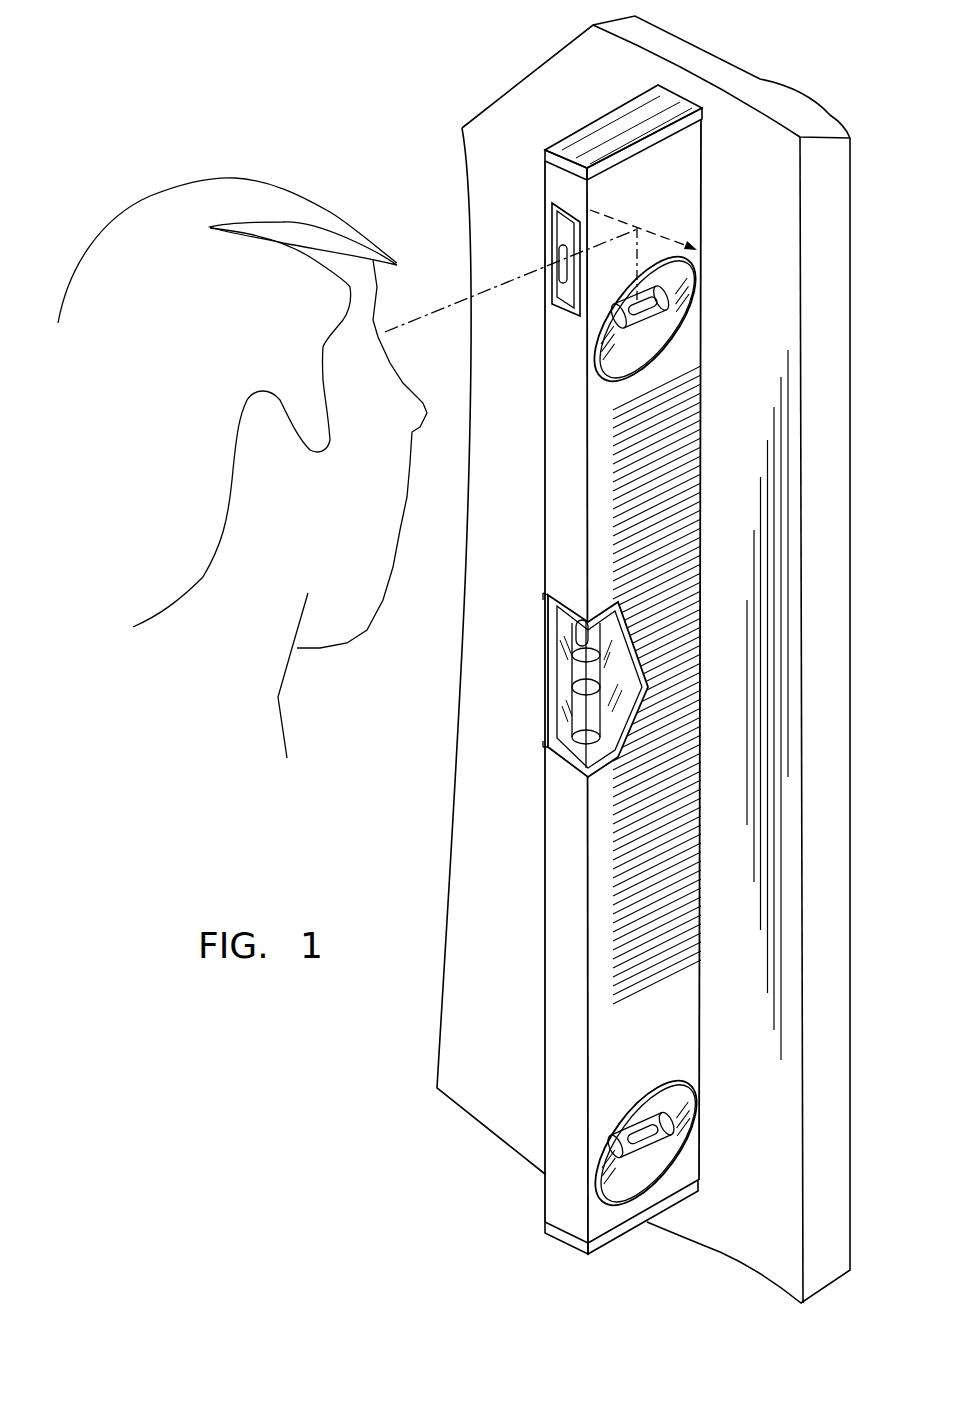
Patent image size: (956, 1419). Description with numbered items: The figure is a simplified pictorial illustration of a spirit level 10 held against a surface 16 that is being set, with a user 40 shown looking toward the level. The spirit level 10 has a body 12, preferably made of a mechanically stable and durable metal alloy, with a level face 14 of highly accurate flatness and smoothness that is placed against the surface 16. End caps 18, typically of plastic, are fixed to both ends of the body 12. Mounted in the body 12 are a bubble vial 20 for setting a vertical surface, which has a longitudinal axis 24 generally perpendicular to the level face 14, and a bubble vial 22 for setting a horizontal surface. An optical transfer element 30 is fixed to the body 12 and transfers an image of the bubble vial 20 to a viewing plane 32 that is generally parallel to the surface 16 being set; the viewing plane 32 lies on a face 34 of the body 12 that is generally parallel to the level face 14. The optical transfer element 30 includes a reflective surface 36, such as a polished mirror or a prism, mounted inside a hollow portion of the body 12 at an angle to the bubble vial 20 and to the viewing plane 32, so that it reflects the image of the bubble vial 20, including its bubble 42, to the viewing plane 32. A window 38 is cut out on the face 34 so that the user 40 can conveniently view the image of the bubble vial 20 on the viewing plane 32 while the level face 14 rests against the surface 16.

The spirit level 10 is at (434, 179).
The body 12 is at (557, 527).
The level face 14 is at (703, 213).
The surface 16 is at (752, 125).
The end caps 18 is at (543, 152).
The bubble vial 20 is at (657, 306).
The bubble vial 22 is at (560, 664).
The longitudinal axis 24 is at (588, 339).
The optical transfer element 30 is at (615, 210).
The viewing plane 32 is at (560, 217).
The face 34 is at (549, 447).
The reflective surface 36 is at (670, 236).
The window 38 is at (548, 298).
The user 40 is at (227, 192).
The bubble 42 is at (632, 299).